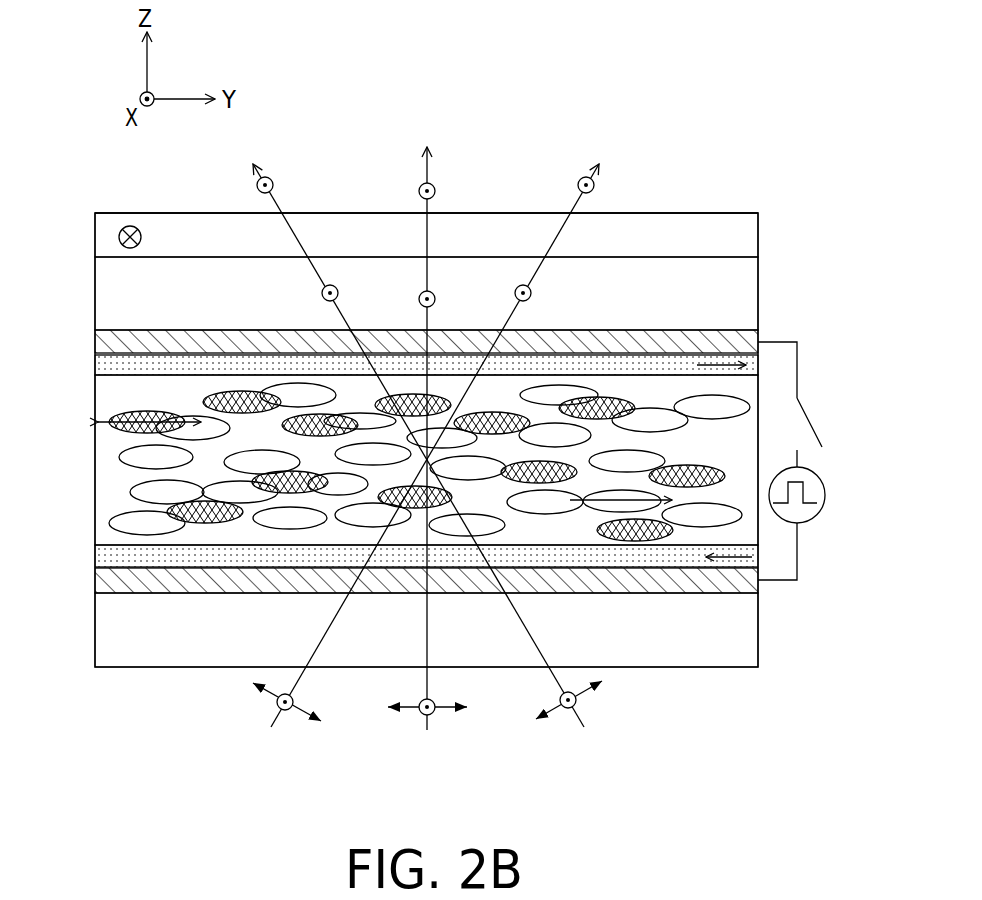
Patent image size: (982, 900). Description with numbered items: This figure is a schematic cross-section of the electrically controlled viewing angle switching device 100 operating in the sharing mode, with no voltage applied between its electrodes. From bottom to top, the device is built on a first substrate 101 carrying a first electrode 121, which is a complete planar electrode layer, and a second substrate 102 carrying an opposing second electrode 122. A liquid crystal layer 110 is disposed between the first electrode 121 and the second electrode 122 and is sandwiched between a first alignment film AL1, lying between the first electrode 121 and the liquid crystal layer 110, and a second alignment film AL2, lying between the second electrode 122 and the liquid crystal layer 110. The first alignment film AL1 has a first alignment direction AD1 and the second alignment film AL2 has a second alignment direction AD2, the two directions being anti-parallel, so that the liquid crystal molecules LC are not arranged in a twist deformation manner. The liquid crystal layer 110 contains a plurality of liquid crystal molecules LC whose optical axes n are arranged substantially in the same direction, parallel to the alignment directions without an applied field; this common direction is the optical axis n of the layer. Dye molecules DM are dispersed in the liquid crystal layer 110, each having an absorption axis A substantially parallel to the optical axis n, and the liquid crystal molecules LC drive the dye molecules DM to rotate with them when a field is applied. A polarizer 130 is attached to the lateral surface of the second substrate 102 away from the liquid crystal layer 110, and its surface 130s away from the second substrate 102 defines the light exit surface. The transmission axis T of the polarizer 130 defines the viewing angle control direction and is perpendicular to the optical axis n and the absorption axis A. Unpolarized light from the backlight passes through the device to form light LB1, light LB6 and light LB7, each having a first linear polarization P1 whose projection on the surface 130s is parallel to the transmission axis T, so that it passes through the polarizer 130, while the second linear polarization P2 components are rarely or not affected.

The electrically controlled viewing angle switching device 100 is at (785, 754).
The surface of the polarizer 130s is at (707, 211).
The polarizer 130 is at (757, 238).
The transmission axis T is at (131, 226).
The second substrate 102 is at (757, 283).
The second electrode 122 is at (102, 346).
The second alignment film AL2 is at (97, 365).
The second alignment direction AD2 is at (716, 362).
The liquid crystal layer 110 is at (99, 460).
The liquid crystal molecules LC is at (123, 518).
The dye molecules DM is at (122, 412).
The absorption axis A is at (123, 432).
The optical axis n is at (625, 506).
The first alignment film AL1 is at (98, 558).
The first alignment direction AD1 is at (735, 560).
The first electrode 121 is at (100, 582).
The first substrate 101 is at (752, 622).
The light LB1 is at (430, 172).
The light LB6 is at (274, 188).
The light LB7 is at (578, 190).
The first linear polarization P1 is at (436, 190).
The second linear polarization P2 is at (558, 712).